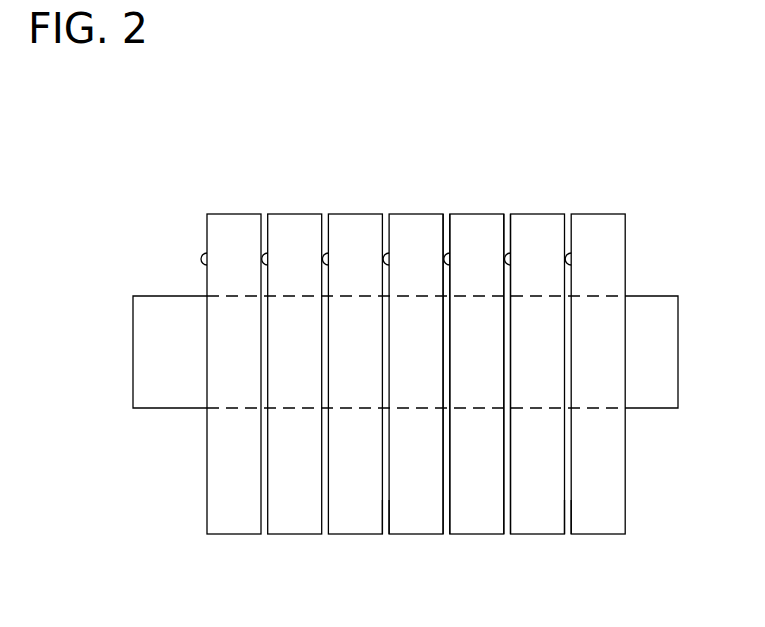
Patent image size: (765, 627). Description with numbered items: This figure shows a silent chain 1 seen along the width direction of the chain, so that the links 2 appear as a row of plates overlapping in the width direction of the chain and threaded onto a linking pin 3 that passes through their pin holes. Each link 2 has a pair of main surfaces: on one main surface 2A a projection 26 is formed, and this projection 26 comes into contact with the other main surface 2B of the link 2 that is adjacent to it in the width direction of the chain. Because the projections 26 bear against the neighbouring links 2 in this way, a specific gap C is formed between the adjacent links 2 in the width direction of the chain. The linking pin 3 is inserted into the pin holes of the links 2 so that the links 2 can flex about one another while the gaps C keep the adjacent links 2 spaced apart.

The silent chain 1 is at (433, 137).
The link 2 is at (354, 218).
The main surface 2A is at (382, 523).
The other main surface 2B is at (389, 512).
The linking pin 3 is at (653, 400).
The projection 26 is at (202, 255).
The gap C is at (507, 212).